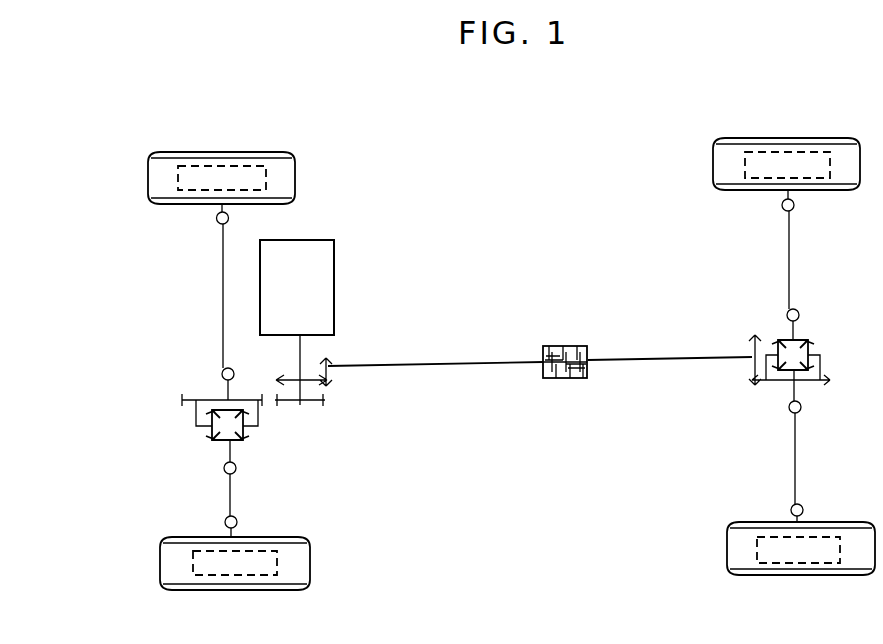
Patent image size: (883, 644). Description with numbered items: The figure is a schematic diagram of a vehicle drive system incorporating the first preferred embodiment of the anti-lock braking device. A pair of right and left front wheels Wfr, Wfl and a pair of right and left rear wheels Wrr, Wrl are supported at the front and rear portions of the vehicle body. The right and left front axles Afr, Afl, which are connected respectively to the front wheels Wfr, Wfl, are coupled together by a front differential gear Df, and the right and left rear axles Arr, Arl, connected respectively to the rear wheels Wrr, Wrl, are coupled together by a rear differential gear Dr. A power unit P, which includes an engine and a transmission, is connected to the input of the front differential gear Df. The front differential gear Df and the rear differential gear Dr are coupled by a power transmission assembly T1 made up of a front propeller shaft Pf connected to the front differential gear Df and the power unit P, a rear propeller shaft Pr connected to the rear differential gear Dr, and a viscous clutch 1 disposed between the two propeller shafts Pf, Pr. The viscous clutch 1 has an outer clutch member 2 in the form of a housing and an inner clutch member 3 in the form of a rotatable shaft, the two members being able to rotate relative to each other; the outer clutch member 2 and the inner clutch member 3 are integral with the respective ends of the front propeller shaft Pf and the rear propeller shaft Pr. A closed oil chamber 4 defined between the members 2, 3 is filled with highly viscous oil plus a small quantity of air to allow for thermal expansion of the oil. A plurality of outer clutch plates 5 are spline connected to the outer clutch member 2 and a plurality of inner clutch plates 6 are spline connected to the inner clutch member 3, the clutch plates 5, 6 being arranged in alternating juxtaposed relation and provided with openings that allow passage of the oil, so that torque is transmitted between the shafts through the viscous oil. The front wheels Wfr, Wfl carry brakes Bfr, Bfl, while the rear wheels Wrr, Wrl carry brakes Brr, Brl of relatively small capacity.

The viscous clutch 1 is at (563, 342).
The outer clutch member 2 is at (578, 347).
The inner clutch member 3 is at (584, 379).
The closed oil chamber 4 is at (548, 379).
The outer clutch plates 5 is at (547, 347).
The inner clutch plates 6 is at (569, 379).
The power unit P is at (297, 287).
The front propeller shaft Pf is at (427, 364).
The rear propeller shaft Pr is at (675, 358).
The power transmission assembly T1 is at (460, 388).
The front differential gear Df is at (260, 438).
The rear differential gear Dr is at (816, 348).
The right front axle Afr is at (223, 291).
The left front axle Afl is at (230, 495).
The right rear axle Arr is at (790, 251).
The left rear axle Arl is at (797, 443).
The right front wheel Wfr is at (171, 156).
The left front wheel Wfl is at (198, 592).
The right rear wheel Wrr is at (748, 143).
The left rear wheel Wrl is at (768, 577).
The right front brake Bfr is at (246, 165).
The left front brake Bfl is at (268, 592).
The right rear brake Brr is at (813, 152).
The left rear brake Brl is at (827, 577).